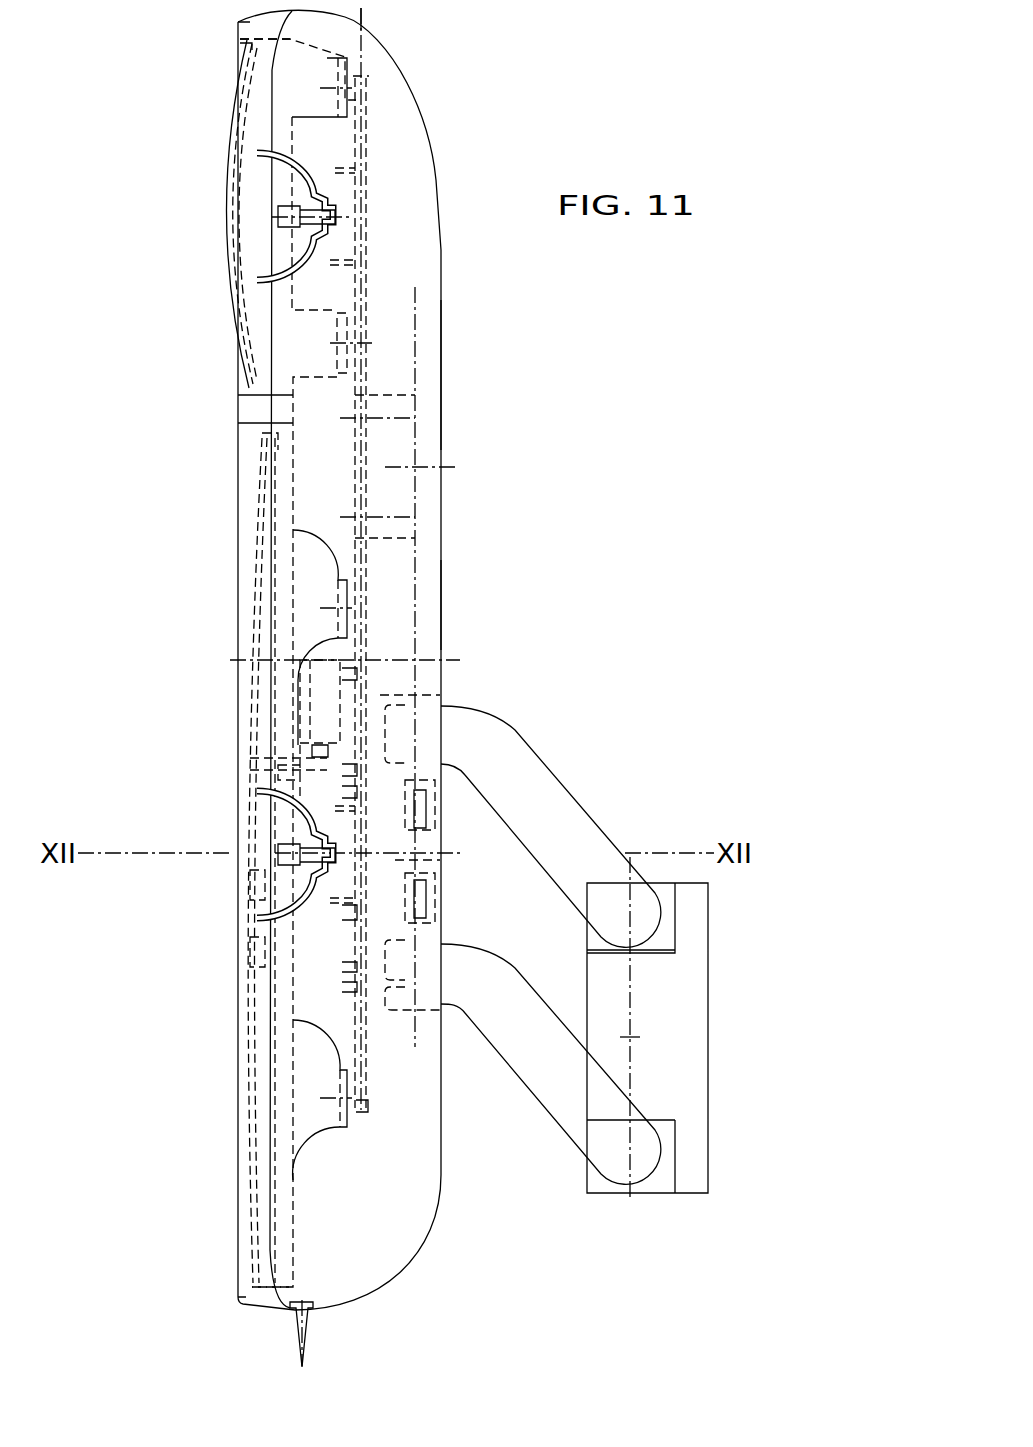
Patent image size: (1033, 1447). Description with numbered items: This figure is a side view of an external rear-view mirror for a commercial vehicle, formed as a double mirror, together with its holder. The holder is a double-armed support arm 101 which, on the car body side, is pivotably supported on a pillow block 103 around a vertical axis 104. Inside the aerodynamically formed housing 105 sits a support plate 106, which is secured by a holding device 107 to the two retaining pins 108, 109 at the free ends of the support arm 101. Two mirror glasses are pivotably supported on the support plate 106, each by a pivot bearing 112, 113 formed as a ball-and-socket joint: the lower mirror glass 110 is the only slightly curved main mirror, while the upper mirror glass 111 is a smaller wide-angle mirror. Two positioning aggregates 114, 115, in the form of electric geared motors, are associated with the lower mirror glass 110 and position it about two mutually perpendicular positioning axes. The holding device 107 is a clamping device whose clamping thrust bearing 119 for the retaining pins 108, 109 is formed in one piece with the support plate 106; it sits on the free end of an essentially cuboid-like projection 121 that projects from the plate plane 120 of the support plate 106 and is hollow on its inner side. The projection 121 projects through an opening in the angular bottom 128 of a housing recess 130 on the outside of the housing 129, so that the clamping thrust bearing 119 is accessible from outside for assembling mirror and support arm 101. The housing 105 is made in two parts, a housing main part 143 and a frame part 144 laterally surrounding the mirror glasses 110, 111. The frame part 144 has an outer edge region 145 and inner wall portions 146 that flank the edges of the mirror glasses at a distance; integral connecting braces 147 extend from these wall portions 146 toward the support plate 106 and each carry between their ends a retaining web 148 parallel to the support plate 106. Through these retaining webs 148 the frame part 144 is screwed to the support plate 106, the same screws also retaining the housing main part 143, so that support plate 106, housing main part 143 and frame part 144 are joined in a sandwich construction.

The double-armed support arm 101 is at (578, 798).
The pillow block 103 is at (690, 1037).
The vertical axis 104 is at (630, 985).
The housing 105 is at (441, 372).
The support plate 106 is at (365, 296).
The holding device 107 is at (423, 838).
The retaining pin 108 is at (405, 807).
The retaining pin 109 is at (420, 908).
The lower mirror glass 110 is at (245, 912).
The upper mirror glass 111 is at (226, 215).
The pivot bearing 112 is at (308, 905).
The pivot bearing 113 is at (308, 263).
The positioning aggregate 114 is at (290, 783).
The positioning aggregate 115 is at (323, 693).
The clamping thrust bearing 119 is at (403, 864).
The plate plane 120 is at (362, 18).
The projection 121 is at (398, 937).
The angular bottom 128 is at (388, 735).
The housing 129 is at (441, 602).
The housing recess 130 is at (435, 887).
The housing main part 143 is at (418, 1193).
The frame part 144 is at (245, 1193).
The edge region 145 is at (243, 1305).
The wall portion 146 is at (272, 397).
The connecting brace 147 is at (323, 1080).
The retaining web 148 is at (343, 1117).